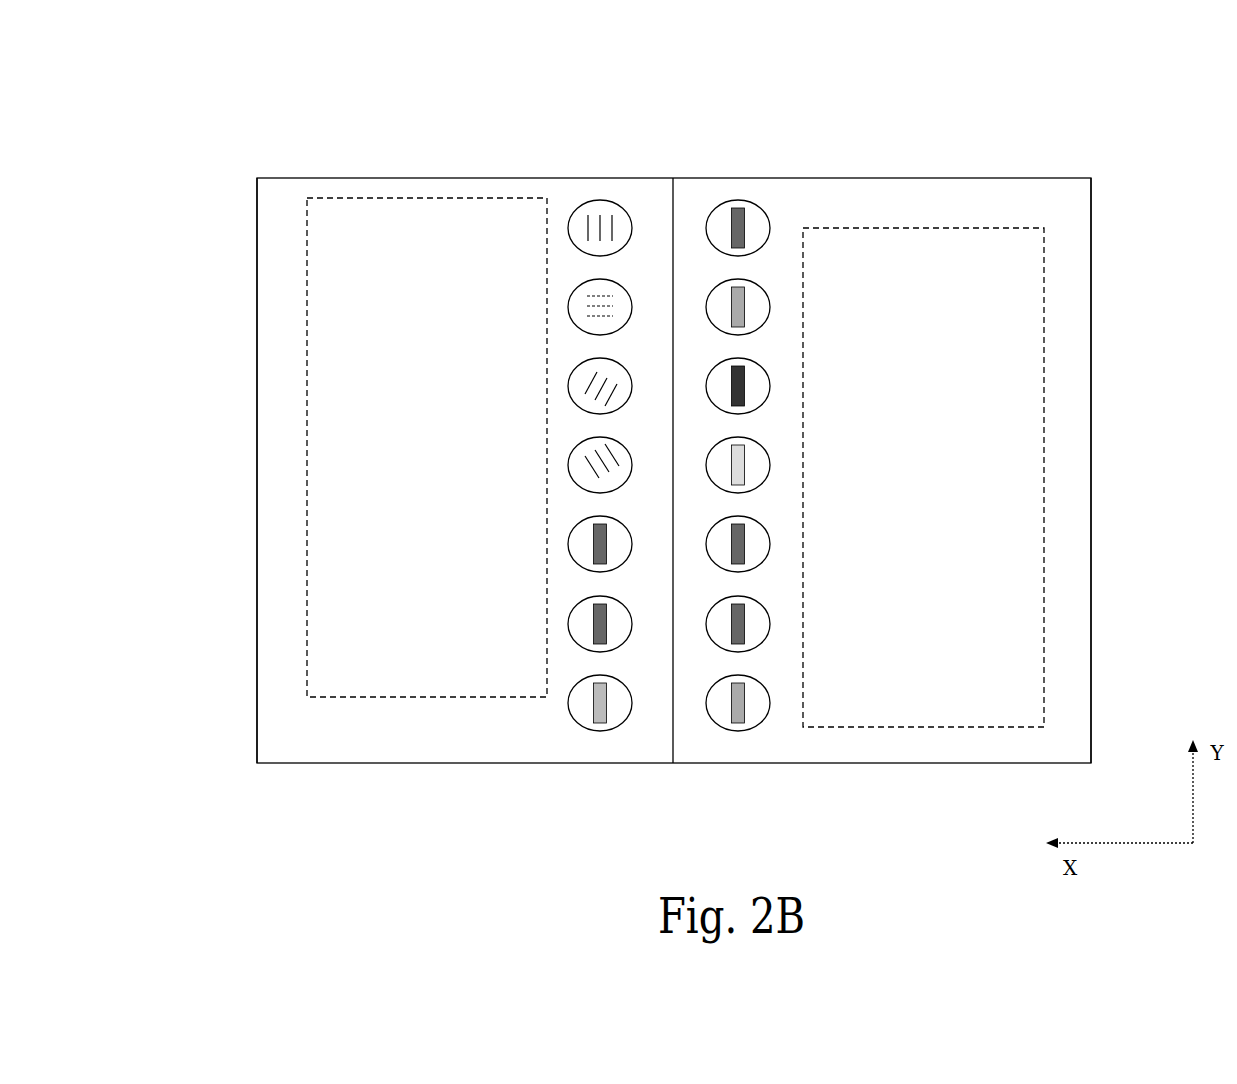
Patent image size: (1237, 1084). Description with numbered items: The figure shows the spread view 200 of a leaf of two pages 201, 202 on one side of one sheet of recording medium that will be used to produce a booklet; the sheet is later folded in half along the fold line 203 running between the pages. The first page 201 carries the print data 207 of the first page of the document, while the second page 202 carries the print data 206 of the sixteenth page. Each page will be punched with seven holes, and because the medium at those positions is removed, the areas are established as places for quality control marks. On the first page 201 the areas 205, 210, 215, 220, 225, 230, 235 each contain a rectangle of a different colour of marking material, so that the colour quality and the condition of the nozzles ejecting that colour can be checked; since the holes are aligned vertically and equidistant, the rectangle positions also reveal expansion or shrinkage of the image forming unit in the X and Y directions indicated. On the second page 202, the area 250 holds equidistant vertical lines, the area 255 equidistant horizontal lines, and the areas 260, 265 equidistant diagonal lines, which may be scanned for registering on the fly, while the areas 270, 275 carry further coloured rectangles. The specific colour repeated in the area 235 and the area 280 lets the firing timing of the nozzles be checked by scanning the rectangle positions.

The spread view 200 is at (1102, 146).
The first page 201 is at (1092, 278).
The second page 202 is at (257, 283).
The fold line 203 is at (673, 225).
The punch hole area 205 is at (770, 232).
The punch hole area 210 is at (770, 311).
The punch hole area 215 is at (770, 384).
The punch hole area 220 is at (770, 462).
The punch hole area 225 is at (770, 538).
The punch hole area 230 is at (770, 618).
The punch hole area 235 is at (770, 697).
The print data 206 is at (420, 198).
The print data 207 is at (978, 232).
The punch hole area 250 is at (568, 232).
The punch hole area 255 is at (568, 311).
The punch hole area 260 is at (568, 390).
The punch hole area 265 is at (568, 470).
The punch hole area 270 is at (568, 547).
The punch hole area 275 is at (568, 625).
The punch hole area 280 is at (568, 702).